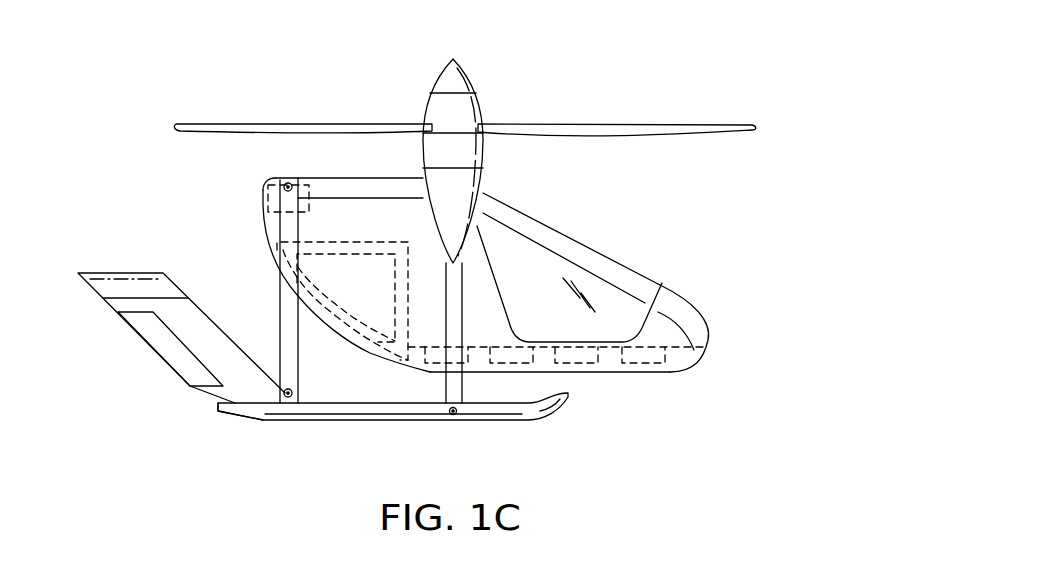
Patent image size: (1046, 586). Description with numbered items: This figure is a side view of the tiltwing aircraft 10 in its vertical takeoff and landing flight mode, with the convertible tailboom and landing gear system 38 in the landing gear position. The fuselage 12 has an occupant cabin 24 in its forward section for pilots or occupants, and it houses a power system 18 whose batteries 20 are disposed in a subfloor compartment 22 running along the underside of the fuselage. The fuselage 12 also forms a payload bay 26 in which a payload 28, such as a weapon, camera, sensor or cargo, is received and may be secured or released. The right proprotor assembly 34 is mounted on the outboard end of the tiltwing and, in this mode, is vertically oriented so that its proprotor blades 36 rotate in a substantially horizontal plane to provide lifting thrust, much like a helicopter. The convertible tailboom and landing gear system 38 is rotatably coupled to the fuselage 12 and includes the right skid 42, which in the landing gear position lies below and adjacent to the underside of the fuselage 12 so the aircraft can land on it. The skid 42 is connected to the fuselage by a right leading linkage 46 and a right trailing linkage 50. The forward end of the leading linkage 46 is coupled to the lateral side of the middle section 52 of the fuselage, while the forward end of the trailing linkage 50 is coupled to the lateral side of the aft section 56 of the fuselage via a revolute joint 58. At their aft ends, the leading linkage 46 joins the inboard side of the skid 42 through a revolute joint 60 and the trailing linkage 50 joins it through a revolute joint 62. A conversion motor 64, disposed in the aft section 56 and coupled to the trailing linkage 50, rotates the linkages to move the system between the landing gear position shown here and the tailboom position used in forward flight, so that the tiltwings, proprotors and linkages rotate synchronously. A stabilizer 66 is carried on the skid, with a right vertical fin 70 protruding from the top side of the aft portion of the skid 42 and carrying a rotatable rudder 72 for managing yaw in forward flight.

The tiltwing aircraft 10 is at (240, 58).
The fuselage 12 is at (677, 297).
The power system 18 is at (651, 368).
The batteries 20 is at (623, 374).
The subfloor compartment 22 is at (707, 360).
The occupant cabin 24 is at (609, 257).
The payload bay 26 is at (321, 241).
The payload 28 is at (378, 337).
The right proprotor assembly 34 is at (444, 63).
The proprotor blades 36 is at (647, 124).
The convertible tailboom and landing gear system 38 is at (238, 421).
The right skid 42 is at (327, 421).
The right leading linkage 46 is at (463, 290).
The right trailing linkage 50 is at (280, 312).
The middle section 52 is at (408, 177).
The aft section 56 is at (300, 177).
The revolute joints 58 is at (290, 182).
The revolute joints 60 is at (454, 416).
The revolute joints 62 is at (299, 393).
The conversion motor 64 is at (268, 205).
The stabilizer 66 is at (98, 272).
The right vertical fin 70 is at (150, 347).
The rotatable rudder 72 is at (170, 349).